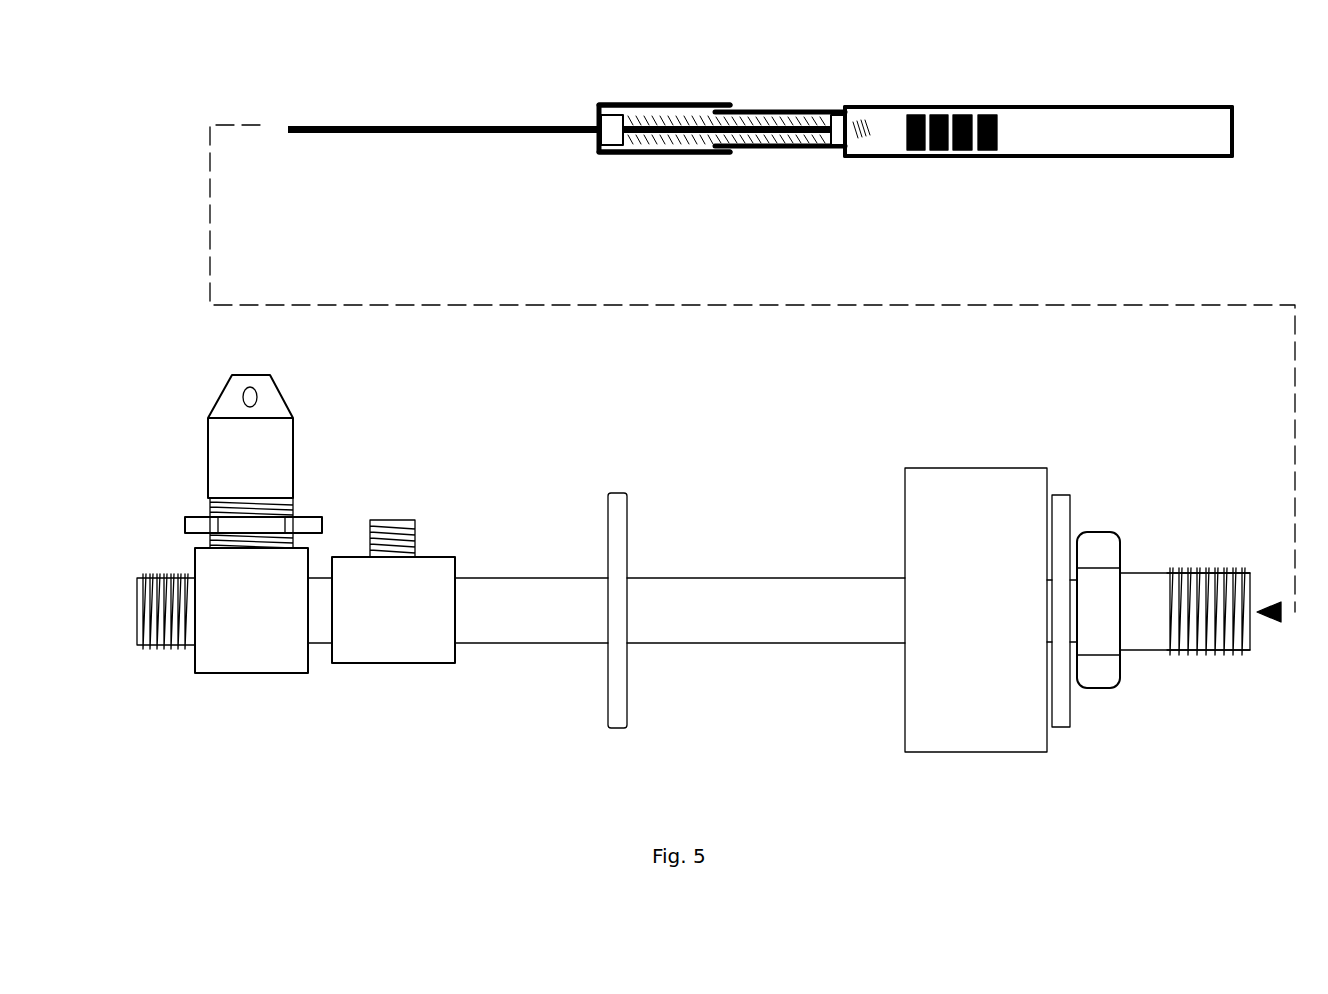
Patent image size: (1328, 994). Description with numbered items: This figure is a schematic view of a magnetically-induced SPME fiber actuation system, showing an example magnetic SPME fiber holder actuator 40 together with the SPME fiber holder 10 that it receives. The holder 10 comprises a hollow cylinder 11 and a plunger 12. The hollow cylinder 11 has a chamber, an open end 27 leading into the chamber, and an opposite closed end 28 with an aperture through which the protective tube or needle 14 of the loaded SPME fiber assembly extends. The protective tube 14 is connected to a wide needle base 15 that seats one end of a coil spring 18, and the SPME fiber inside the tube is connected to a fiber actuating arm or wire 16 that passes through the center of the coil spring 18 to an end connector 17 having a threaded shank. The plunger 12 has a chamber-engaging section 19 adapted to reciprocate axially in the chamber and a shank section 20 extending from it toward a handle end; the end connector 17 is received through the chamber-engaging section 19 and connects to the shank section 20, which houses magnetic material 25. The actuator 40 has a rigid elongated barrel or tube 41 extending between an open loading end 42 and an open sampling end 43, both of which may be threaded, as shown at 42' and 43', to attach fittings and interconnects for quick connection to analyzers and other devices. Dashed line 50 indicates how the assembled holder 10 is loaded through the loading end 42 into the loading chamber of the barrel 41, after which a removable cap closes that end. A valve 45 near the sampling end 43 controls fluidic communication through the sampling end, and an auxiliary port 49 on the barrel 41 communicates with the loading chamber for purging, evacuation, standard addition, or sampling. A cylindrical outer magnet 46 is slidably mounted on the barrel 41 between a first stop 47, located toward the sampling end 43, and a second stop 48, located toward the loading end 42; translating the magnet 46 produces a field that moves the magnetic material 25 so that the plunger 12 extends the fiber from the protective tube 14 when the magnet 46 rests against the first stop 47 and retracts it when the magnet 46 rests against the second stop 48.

The SPME fiber holder 10 is at (1024, 70).
The hollow cylinder 11 is at (661, 167).
The plunger 12 is at (1095, 168).
The protective tube or needle 14 is at (404, 125).
The needle base 15 is at (610, 148).
The fiber actuating arm or wire 16 is at (687, 127).
The end connector 17 is at (837, 147).
The coil spring 18 is at (678, 137).
The chamber-engaging section 19 is at (778, 112).
The shank section 20 is at (1130, 105).
The magnetic material 25 is at (905, 157).
The open end 27 is at (722, 104).
The closed end 28 is at (598, 118).
The magnetic SPME fiber holder actuator 40 is at (800, 402).
The elongated barrel or tube 41 is at (810, 643).
The loading end 42 is at (1182, 618).
The threads of loading end 42' is at (1219, 592).
The sampling end 43 is at (205, 621).
The threads of sampling end 43' is at (150, 591).
The valve 45 is at (207, 456).
The cylindrical outer magnet 46 is at (960, 468).
The first stop 47 is at (625, 520).
The second stop 48 is at (1068, 515).
The auxiliary port 49 is at (392, 522).
The dashed line 50 is at (777, 302).